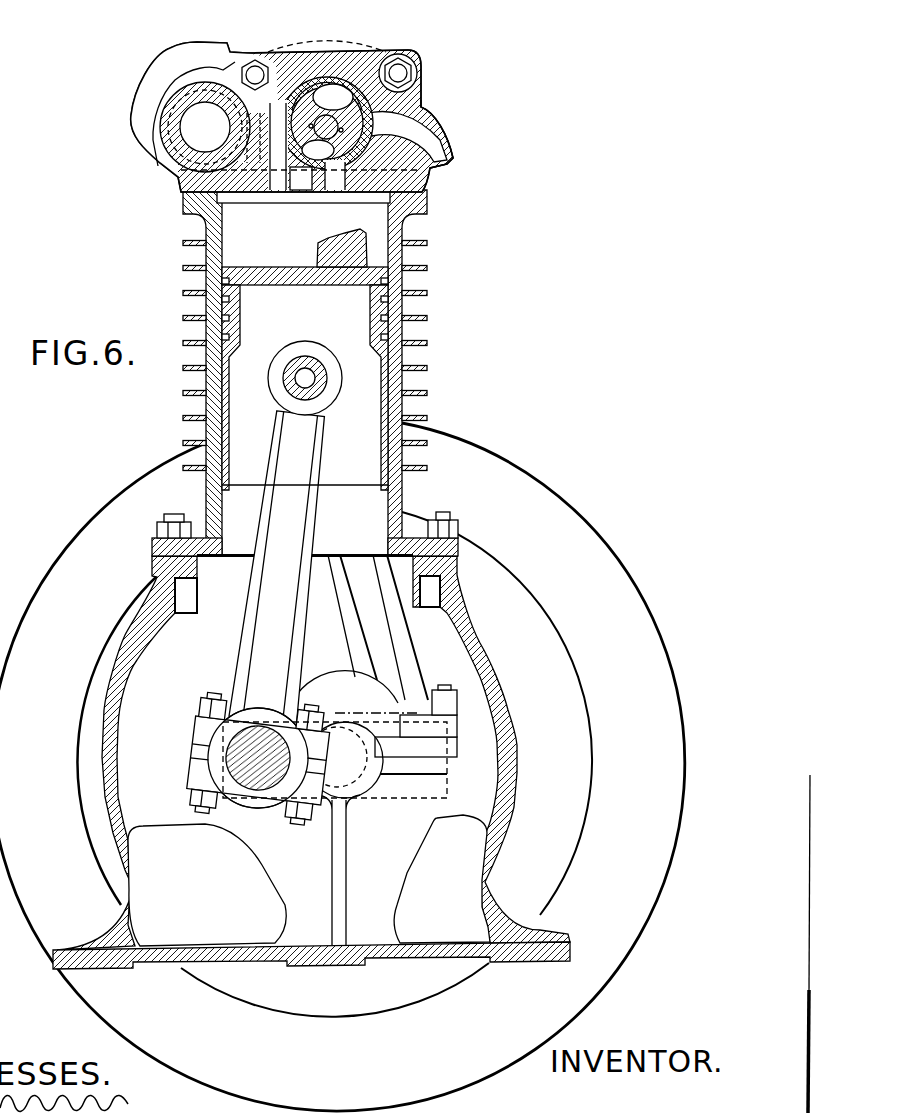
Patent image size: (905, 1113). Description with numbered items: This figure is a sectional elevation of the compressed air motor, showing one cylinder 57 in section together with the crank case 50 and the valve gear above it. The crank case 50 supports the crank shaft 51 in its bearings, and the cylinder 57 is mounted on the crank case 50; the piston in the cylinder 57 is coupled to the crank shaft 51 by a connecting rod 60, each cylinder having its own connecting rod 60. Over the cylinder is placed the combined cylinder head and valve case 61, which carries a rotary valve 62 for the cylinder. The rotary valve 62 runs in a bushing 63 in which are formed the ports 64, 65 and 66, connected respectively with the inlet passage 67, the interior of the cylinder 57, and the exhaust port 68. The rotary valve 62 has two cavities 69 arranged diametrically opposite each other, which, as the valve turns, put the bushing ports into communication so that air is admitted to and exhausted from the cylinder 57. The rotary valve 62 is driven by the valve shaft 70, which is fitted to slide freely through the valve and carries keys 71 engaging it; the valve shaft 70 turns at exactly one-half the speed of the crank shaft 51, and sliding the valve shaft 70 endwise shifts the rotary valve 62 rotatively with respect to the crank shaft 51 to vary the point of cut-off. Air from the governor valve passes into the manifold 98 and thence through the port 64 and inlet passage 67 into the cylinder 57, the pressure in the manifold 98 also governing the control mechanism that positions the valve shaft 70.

The crank case 50 is at (217, 950).
The crank shaft 51 is at (366, 790).
The cylinder 57 is at (305, 359).
The connecting rod 60 is at (306, 619).
The combined cylinder head and valve case 61 is at (333, 77).
The rotary valve 62 is at (313, 80).
The bushing 63 is at (360, 83).
The port 64 is at (283, 108).
The port 65 is at (333, 162).
The port 66 is at (373, 127).
The inlet passage 67 is at (274, 112).
The exhaust port 68 is at (420, 140).
The cavity 69 is at (327, 122).
The valve shaft 70 is at (285, 193).
The key 71 is at (338, 140).
The manifold 98 is at (205, 127).